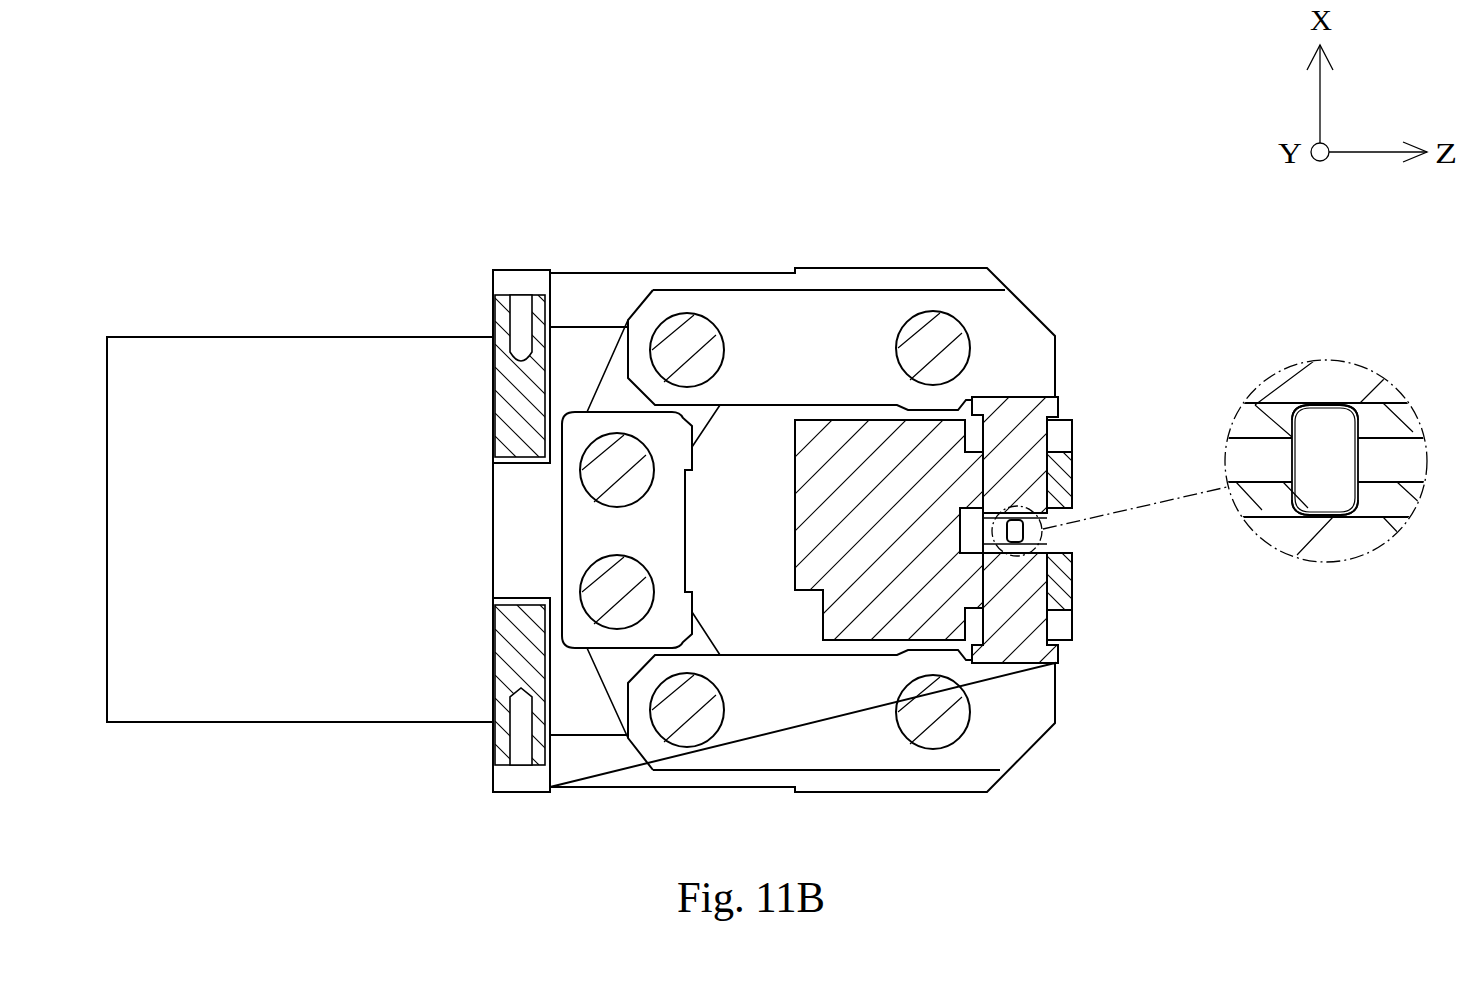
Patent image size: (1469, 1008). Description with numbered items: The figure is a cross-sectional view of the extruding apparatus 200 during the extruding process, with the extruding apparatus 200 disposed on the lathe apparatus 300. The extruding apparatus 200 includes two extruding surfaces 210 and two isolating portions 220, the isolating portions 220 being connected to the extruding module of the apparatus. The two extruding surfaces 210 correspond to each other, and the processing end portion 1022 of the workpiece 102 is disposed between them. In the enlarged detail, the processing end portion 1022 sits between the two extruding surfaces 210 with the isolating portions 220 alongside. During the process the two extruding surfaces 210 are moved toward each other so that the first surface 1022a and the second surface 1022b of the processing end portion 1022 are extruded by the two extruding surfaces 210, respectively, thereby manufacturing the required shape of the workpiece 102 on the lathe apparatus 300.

The lathe apparatus 300 is at (273, 347).
The extruding apparatus 200 is at (840, 303).
The workpiece 102 is at (1050, 535).
The extruding surface 210 is at (1355, 405).
The isolating portion 220 is at (1388, 420).
The processing end portion 1022 is at (1305, 462).
The first surface 1022a is at (1302, 414).
The second surface 1022b is at (1335, 515).